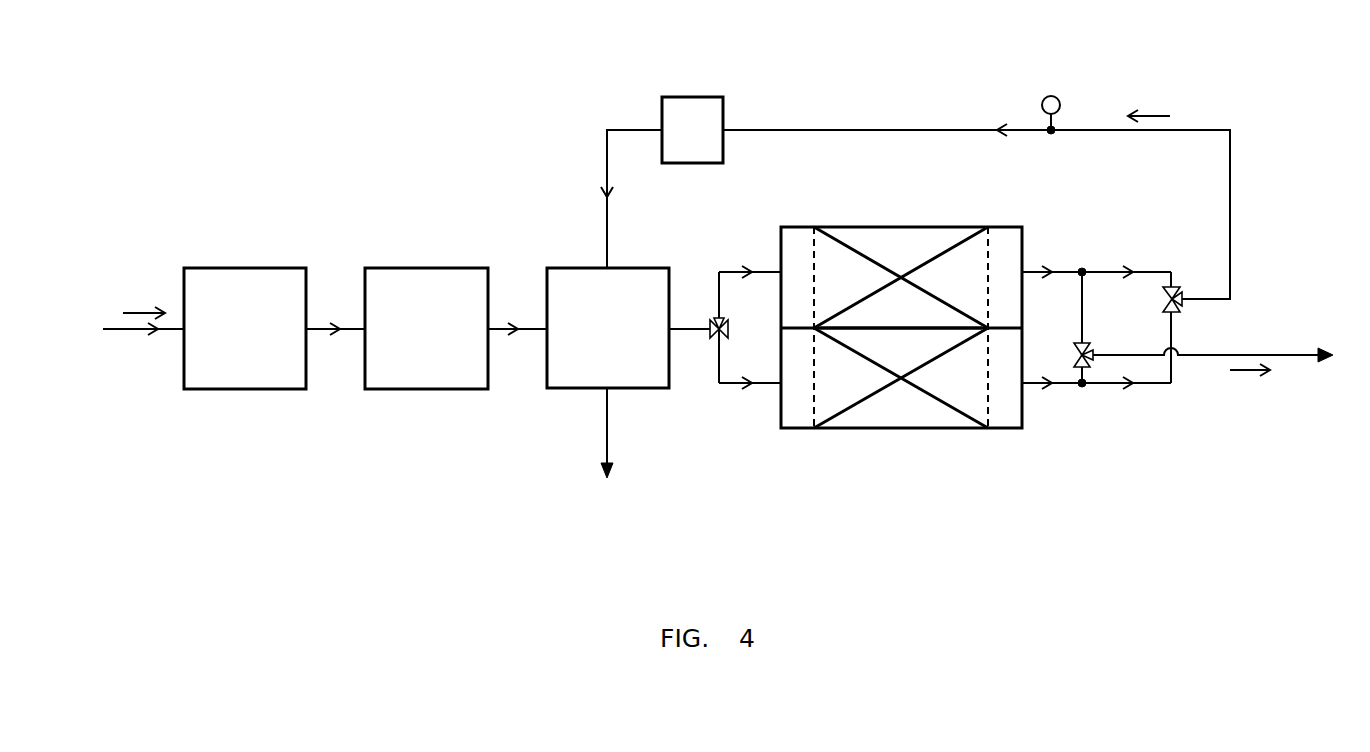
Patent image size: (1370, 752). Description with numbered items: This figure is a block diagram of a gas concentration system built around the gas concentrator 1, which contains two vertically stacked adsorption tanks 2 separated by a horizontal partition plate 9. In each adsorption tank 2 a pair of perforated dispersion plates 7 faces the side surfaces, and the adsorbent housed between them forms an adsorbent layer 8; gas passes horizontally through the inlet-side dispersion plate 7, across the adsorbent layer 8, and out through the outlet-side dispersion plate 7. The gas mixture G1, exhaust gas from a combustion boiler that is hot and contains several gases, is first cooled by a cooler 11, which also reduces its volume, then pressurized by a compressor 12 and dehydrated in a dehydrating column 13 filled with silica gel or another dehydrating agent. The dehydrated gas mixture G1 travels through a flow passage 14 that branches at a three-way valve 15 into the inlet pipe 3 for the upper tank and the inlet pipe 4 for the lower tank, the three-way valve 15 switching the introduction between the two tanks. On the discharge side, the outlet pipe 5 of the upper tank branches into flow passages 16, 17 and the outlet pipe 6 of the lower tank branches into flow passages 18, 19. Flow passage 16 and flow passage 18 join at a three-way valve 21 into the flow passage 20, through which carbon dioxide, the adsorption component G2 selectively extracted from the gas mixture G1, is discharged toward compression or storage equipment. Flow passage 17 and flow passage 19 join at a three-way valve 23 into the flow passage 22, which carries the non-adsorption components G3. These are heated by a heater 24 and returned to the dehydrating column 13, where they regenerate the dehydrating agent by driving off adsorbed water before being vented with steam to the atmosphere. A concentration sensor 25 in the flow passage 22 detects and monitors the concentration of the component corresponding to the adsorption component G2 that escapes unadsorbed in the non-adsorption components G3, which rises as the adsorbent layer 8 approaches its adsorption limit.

The gas concentrator 1 is at (911, 349).
The adsorption tank 2 is at (1022, 263).
The inlet pipe 3 is at (738, 272).
The inlet pipe 4 is at (733, 385).
The outlet pipe 5 is at (1068, 270).
The outlet pipe 6 is at (1063, 386).
The dispersion plate 7 is at (812, 257).
The adsorbent layer 8 is at (915, 250).
The partition plate 9 is at (903, 330).
The cooler 11 is at (205, 268).
The compressor 12 is at (386, 268).
The dehydrating column 13 is at (569, 268).
The flow passage 14 is at (688, 332).
The three-way valve 15 is at (716, 335).
The flow passage 16 is at (1084, 307).
The flow passage 17 is at (1153, 270).
The flow passage 18 is at (1088, 373).
The flow passage 19 is at (1158, 385).
The flow passage 20 is at (1197, 360).
The three-way valve 21 is at (1075, 355).
The flow passage 22 is at (633, 130).
The three-way valve 23 is at (1183, 308).
The heater 24 is at (723, 106).
The concentration sensor 25 is at (1057, 97).
The gas mixture G1 is at (143, 307).
The adsorption component G2 is at (1250, 385).
The non-adsorption components G3 is at (1149, 103).